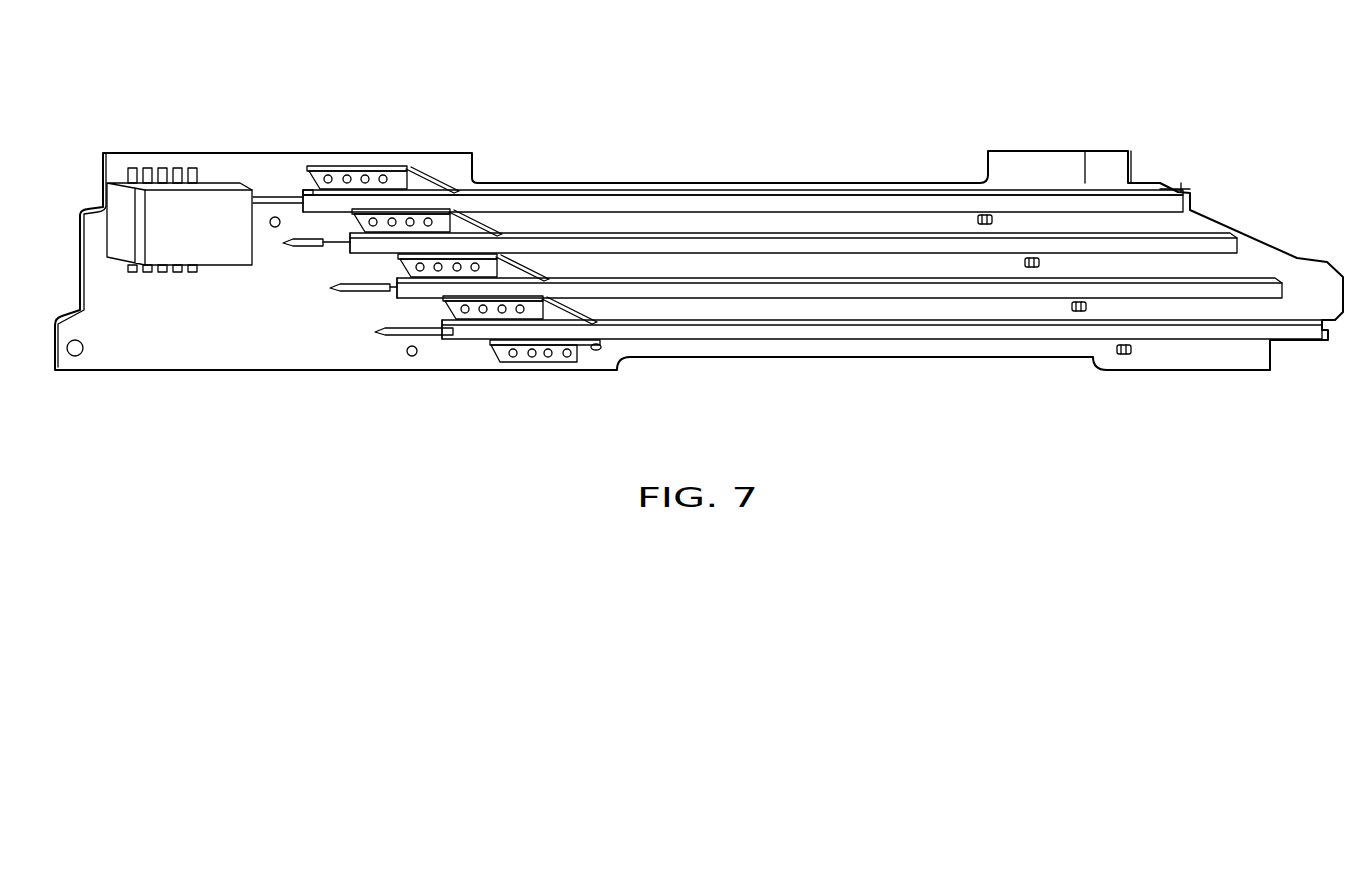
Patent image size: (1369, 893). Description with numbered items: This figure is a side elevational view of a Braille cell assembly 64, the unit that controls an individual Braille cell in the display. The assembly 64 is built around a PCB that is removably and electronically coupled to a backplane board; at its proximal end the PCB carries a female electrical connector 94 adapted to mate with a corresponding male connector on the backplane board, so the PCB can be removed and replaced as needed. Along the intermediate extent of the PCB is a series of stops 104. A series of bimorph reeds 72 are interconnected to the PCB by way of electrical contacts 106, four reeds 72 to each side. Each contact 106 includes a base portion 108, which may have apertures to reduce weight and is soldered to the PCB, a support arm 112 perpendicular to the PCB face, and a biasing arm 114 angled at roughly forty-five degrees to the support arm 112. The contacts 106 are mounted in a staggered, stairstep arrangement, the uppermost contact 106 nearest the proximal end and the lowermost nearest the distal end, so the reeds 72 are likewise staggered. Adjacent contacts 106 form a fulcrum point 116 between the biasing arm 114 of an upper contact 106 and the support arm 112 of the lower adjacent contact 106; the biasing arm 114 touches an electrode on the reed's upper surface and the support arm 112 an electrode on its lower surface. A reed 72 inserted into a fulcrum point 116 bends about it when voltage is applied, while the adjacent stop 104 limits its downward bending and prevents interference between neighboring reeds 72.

The Braille cell assembly 64 is at (818, 104).
The bimorph reed 72 is at (1183, 200).
The female electrical connector 94 is at (215, 205).
The stop 104 is at (978, 220).
The electrical contact 106 is at (333, 138).
The base portion 108 is at (288, 160).
The support arm 112 is at (388, 160).
The biasing arm 114 is at (450, 195).
The fulcrum point 116 is at (410, 203).